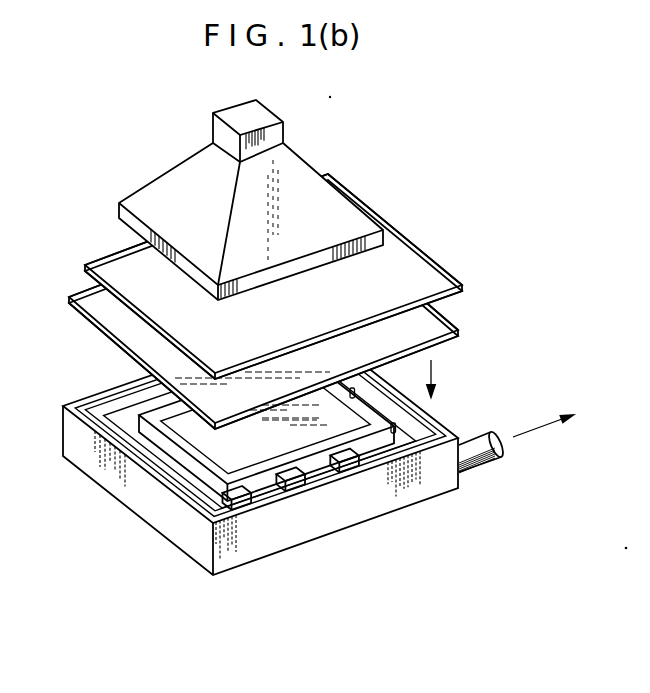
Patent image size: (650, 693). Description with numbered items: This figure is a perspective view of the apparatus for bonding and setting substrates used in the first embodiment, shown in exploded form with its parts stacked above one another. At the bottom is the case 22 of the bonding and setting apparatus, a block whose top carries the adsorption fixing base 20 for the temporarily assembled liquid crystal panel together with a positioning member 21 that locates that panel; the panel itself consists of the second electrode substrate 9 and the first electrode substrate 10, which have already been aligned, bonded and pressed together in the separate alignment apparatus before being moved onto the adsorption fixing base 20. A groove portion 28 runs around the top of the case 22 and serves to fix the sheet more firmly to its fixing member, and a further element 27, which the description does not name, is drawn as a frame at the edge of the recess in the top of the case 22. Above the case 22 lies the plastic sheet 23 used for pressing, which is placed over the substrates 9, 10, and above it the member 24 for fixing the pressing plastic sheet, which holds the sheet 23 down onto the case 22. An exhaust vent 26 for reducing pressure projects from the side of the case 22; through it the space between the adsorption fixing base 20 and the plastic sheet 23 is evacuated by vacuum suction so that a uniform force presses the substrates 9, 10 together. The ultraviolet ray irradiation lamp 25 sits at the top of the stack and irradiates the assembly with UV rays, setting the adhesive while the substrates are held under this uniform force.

The second electrode substrate 9 is at (332, 445).
The first electrode substrate 10 is at (280, 470).
The adsorption fixing base 20 is at (245, 500).
The positioning member 21 is at (197, 450).
The case 22 is at (420, 495).
The plastic sheet 23 is at (457, 322).
The member for fixing the pressing plastic sheet 24 is at (417, 250).
The ultraviolet ray irradiation lamp 25 is at (303, 177).
The exhaust vent 26 is at (487, 460).
The frame 27 is at (400, 430).
The groove portion 28 is at (147, 460).